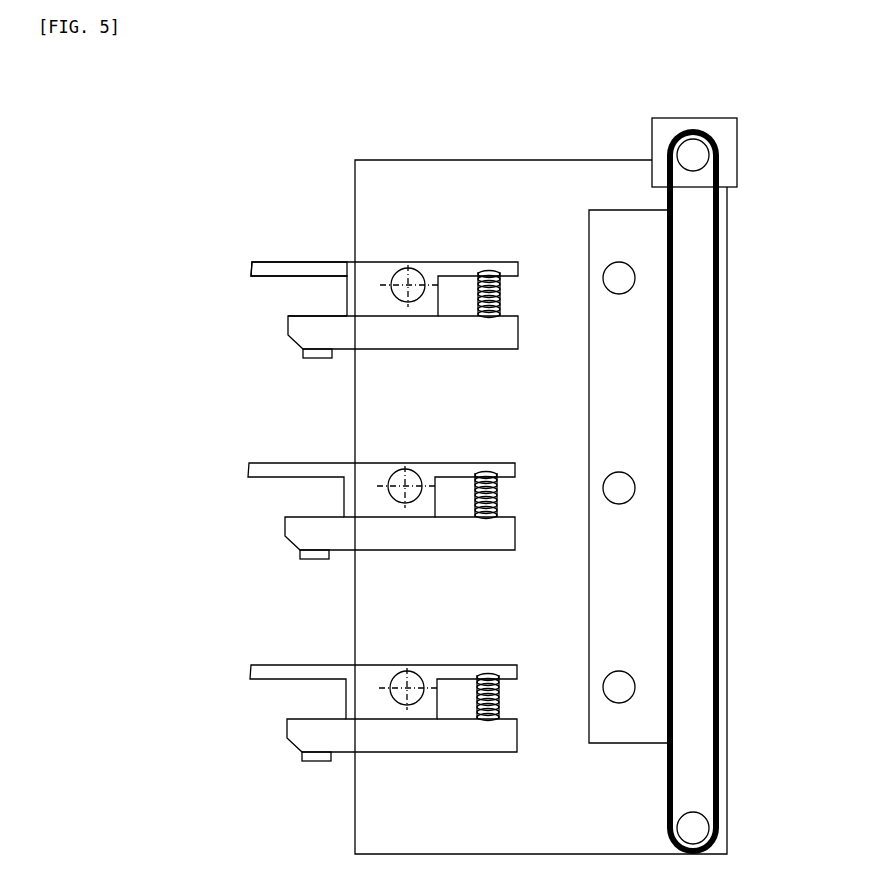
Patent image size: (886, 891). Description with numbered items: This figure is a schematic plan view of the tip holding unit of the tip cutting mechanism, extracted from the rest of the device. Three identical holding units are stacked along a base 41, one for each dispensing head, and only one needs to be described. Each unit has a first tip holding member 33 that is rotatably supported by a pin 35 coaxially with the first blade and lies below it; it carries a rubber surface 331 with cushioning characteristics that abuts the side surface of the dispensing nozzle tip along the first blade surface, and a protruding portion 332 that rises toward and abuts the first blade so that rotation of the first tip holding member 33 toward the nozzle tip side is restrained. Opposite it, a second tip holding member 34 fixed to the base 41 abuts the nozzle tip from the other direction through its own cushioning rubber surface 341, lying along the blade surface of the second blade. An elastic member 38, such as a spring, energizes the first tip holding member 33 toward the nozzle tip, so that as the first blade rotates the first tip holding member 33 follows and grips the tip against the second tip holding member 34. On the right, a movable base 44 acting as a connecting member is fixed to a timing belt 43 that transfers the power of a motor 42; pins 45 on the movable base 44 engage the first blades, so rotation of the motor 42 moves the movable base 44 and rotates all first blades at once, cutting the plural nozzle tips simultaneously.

The first tip holding member 33 is at (363, 365).
The rubber surface 331 is at (318, 314).
The protruding portion 332 is at (315, 358).
The second tip holding member 34 is at (363, 214).
The rubber surface 341 is at (273, 278).
The pin 35 is at (398, 268).
The elastic member 38 is at (488, 272).
The base 41 is at (628, 172).
The motor 42 is at (728, 128).
The timing belt 43 is at (722, 397).
The movable base 44 is at (632, 577).
The pin 45 is at (622, 278).